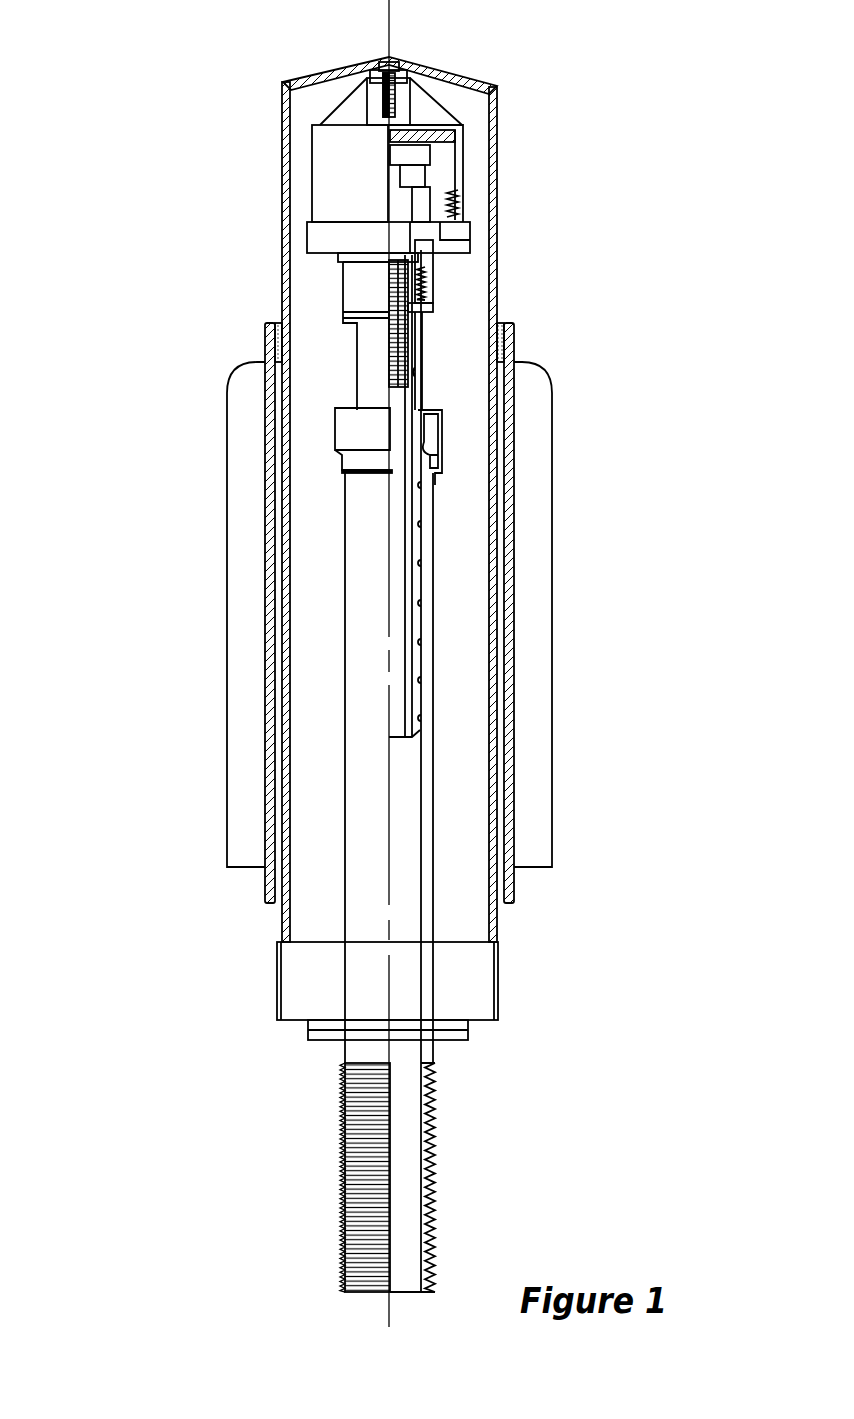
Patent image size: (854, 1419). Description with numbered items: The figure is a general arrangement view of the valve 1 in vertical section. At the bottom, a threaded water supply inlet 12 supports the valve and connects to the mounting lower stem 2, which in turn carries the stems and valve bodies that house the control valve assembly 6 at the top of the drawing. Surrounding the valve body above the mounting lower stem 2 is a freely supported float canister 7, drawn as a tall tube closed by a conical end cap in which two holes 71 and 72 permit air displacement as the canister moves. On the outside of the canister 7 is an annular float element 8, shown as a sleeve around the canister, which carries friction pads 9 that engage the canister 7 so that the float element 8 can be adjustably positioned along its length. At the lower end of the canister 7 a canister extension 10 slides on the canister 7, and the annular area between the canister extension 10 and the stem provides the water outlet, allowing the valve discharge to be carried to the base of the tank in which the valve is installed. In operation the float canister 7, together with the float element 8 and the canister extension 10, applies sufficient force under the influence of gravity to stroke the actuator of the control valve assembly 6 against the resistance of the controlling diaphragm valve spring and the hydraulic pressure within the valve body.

The valve 1 is at (158, 718).
The mounting lower stem 2 is at (350, 432).
The control valve assembly 6 is at (338, 185).
The float canister 7 is at (496, 177).
The annular float element 8 is at (552, 795).
The friction pads 9 is at (501, 325).
The canister extension 10 is at (500, 986).
The water supply inlet 12 is at (407, 1195).
The hole 71 is at (400, 58).
The hole 72 is at (458, 72).